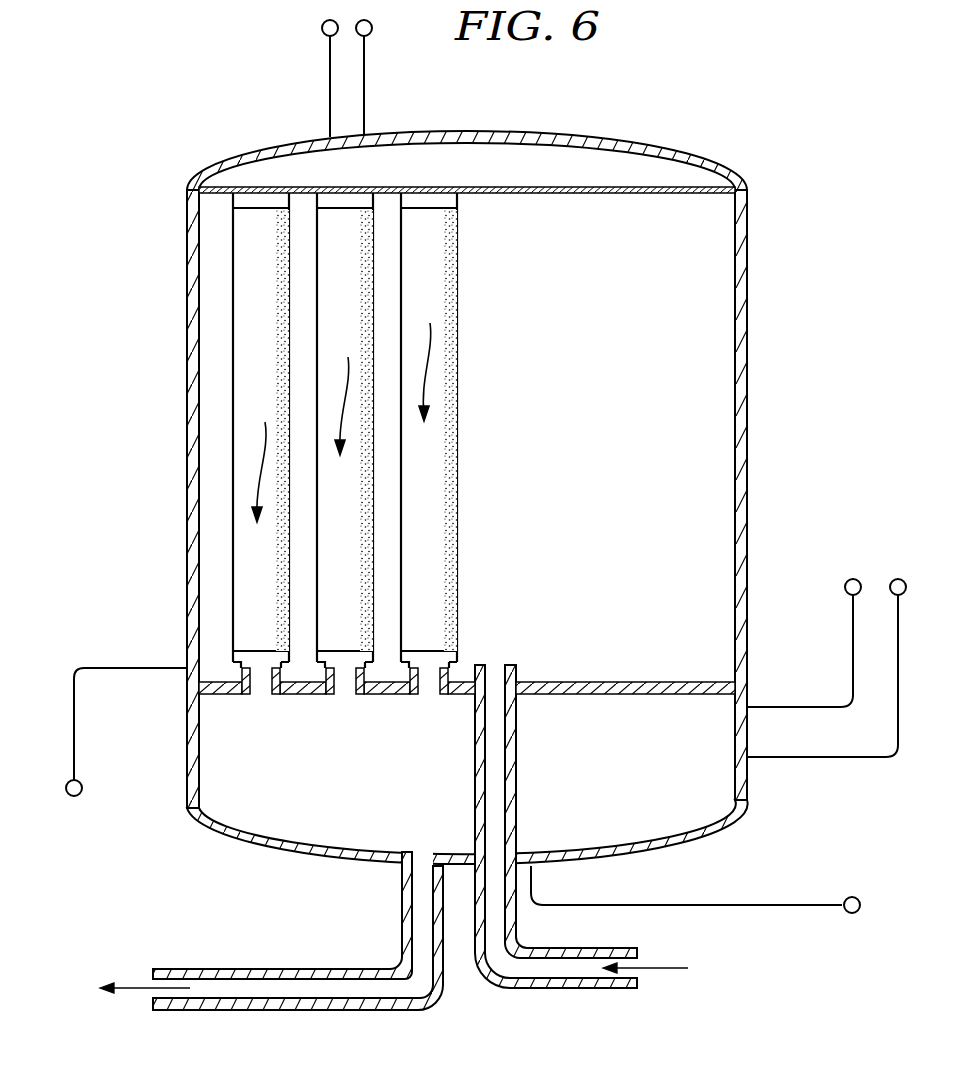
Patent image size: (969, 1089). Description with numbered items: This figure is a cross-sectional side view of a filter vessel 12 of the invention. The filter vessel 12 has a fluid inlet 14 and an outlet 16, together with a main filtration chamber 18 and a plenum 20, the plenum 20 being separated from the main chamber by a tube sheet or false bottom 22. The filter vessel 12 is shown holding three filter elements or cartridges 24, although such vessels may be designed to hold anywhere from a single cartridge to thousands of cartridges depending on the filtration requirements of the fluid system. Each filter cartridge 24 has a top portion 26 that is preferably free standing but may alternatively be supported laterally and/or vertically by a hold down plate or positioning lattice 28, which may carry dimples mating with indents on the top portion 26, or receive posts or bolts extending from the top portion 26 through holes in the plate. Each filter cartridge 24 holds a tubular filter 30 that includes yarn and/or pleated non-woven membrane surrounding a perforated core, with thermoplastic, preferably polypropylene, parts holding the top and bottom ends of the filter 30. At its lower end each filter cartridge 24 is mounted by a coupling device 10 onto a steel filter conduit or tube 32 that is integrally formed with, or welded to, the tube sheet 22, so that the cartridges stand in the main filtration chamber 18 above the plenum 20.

The coupling device 10 is at (233, 669).
The filter vessel 12 is at (748, 296).
The fluid inlet 14 is at (557, 977).
The outlet 16 is at (247, 993).
The main filtration chamber 18 is at (706, 508).
The plenum 20 is at (303, 813).
The tube sheet 22 is at (635, 698).
The filter cartridge 24 is at (233, 274).
The top portion 26 is at (353, 203).
The hold down plate 28 is at (616, 197).
The tubular filter 30 is at (345, 537).
The filter tube 32 is at (260, 688).